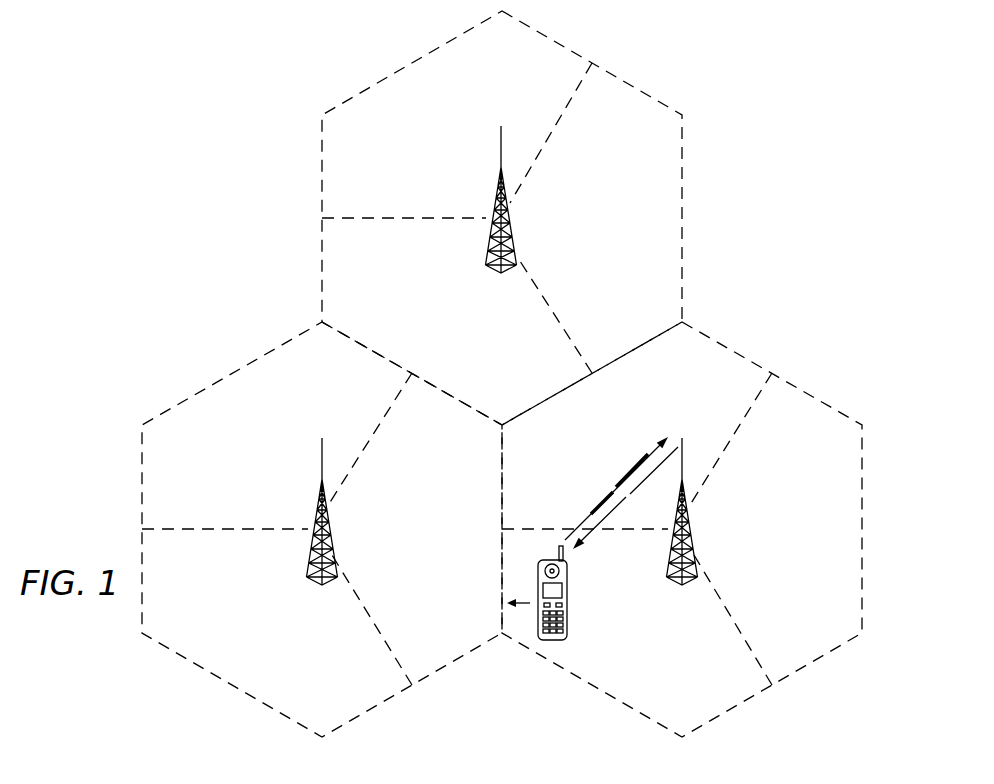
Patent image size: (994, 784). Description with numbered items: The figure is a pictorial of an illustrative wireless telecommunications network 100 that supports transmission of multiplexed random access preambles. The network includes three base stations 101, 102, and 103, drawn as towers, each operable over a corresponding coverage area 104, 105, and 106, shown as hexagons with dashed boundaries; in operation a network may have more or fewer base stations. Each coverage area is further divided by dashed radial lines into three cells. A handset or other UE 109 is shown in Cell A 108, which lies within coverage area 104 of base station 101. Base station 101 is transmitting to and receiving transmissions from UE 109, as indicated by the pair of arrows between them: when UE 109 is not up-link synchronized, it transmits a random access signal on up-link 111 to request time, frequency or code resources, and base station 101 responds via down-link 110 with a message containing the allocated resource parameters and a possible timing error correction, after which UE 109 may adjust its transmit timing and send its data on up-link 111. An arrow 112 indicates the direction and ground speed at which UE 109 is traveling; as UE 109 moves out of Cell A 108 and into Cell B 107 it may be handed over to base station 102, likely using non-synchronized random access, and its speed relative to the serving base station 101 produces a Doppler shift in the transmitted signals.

The wireless telecommunications network 100 is at (750, 72).
The base station 101 is at (697, 541).
The base station 102 is at (318, 492).
The base station 103 is at (499, 183).
The coverage area 104 is at (802, 668).
The coverage area 105 is at (228, 678).
The coverage area 106 is at (683, 218).
The Cell B 107 is at (449, 625).
The Cell A 108 is at (688, 696).
The UE 109 is at (568, 612).
The down-link 110 is at (602, 527).
The up-link 111 is at (625, 477).
The direction and ground speed indicator 112 is at (530, 603).